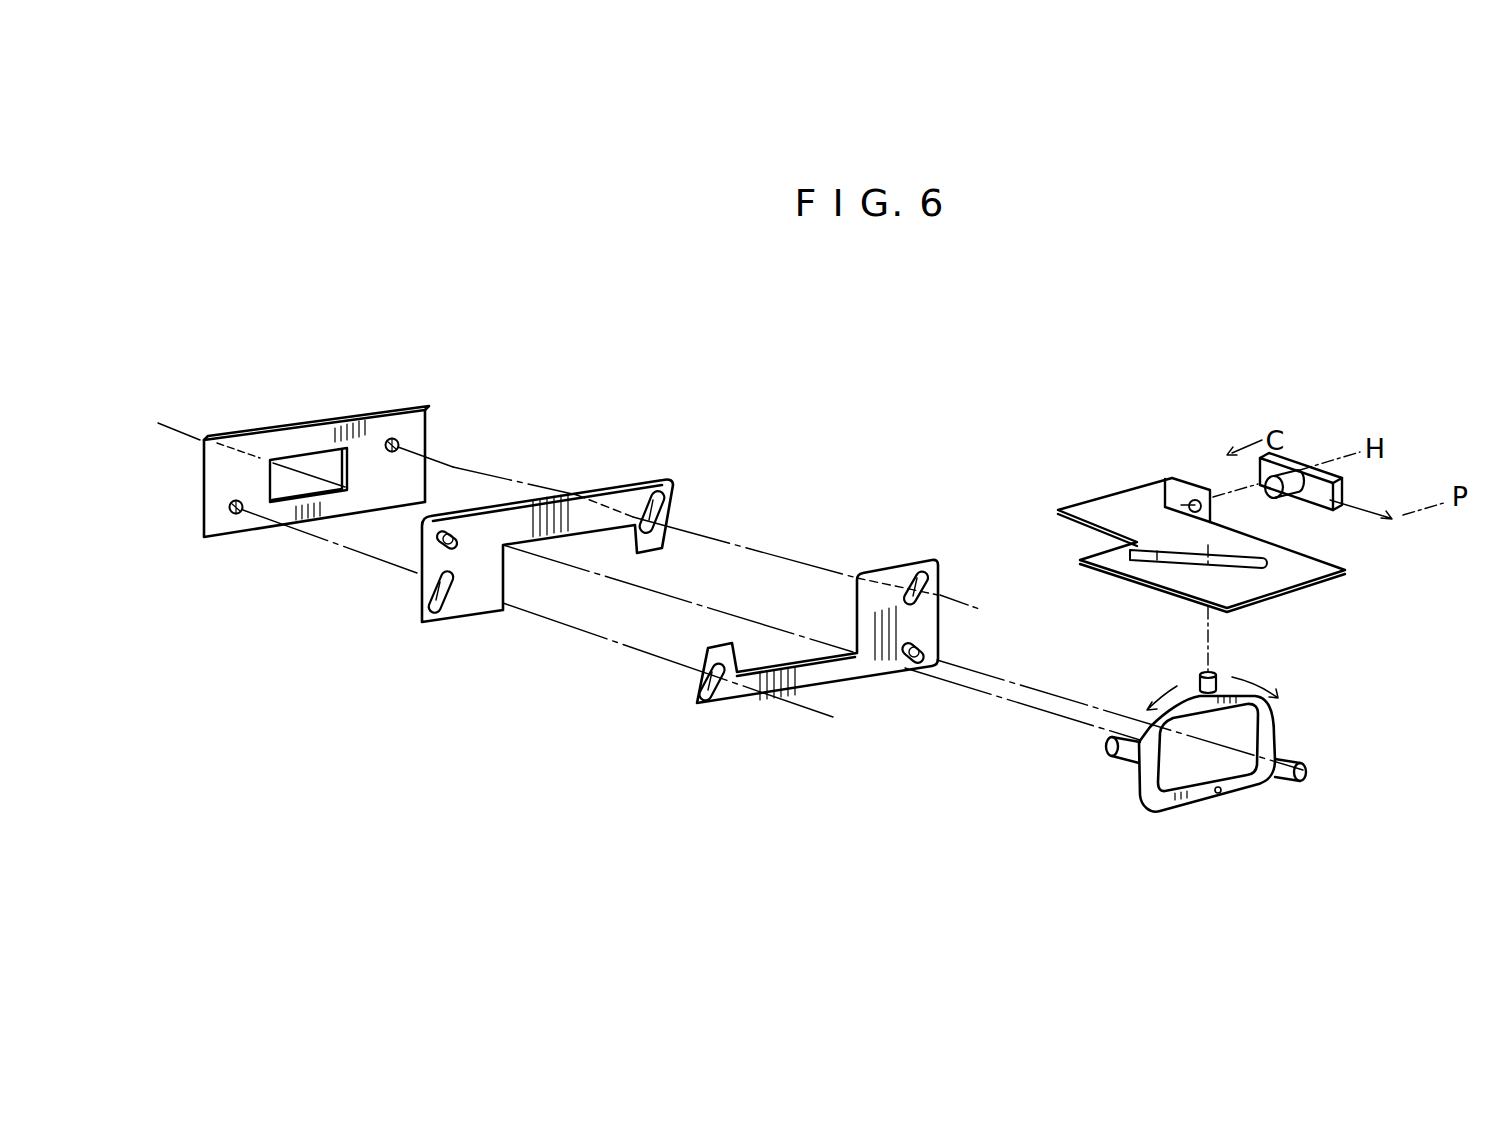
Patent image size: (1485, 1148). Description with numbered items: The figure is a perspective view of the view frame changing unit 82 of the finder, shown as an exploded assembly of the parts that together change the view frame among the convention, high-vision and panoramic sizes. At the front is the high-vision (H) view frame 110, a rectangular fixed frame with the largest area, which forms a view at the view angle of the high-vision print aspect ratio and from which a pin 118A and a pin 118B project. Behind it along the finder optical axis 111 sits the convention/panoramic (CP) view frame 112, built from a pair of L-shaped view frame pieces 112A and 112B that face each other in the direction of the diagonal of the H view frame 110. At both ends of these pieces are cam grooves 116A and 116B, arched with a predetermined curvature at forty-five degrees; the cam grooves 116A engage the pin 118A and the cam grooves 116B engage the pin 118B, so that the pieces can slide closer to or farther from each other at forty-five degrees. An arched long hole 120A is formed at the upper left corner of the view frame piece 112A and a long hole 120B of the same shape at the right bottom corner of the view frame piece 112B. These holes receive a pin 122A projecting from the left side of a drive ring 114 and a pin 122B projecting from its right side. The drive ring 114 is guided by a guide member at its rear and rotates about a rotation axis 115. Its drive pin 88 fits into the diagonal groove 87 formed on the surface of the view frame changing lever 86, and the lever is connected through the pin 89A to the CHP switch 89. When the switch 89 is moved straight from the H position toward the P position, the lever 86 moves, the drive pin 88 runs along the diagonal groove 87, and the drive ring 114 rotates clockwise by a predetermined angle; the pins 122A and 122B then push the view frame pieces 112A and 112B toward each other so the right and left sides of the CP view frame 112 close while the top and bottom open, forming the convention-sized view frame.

The view frame changing unit 82 is at (849, 457).
The view frame changing lever 86 is at (1201, 570).
The diagonal groove 87 is at (1182, 550).
The drive pin 88 is at (1213, 672).
The CHP switch 89 is at (1301, 472).
The pin 89A is at (1293, 493).
The high-vision (H) view frame 110 is at (353, 462).
The finder optical axis 111 is at (367, 496).
The convention/panoramic (CP) view frame 112 is at (681, 618).
The view frame piece 112A is at (838, 674).
The view frame piece 112B is at (537, 508).
The drive ring 114 is at (1174, 759).
The rotation axis 115 is at (1218, 794).
The cam groove 116A is at (450, 615).
The cam groove 116B is at (658, 477).
The pin 118A is at (246, 514).
The pin 118B is at (400, 444).
The arched long hole 120A is at (437, 539).
The long hole 120B is at (940, 648).
The pin 122A is at (1104, 738).
The pin 122B is at (1282, 778).